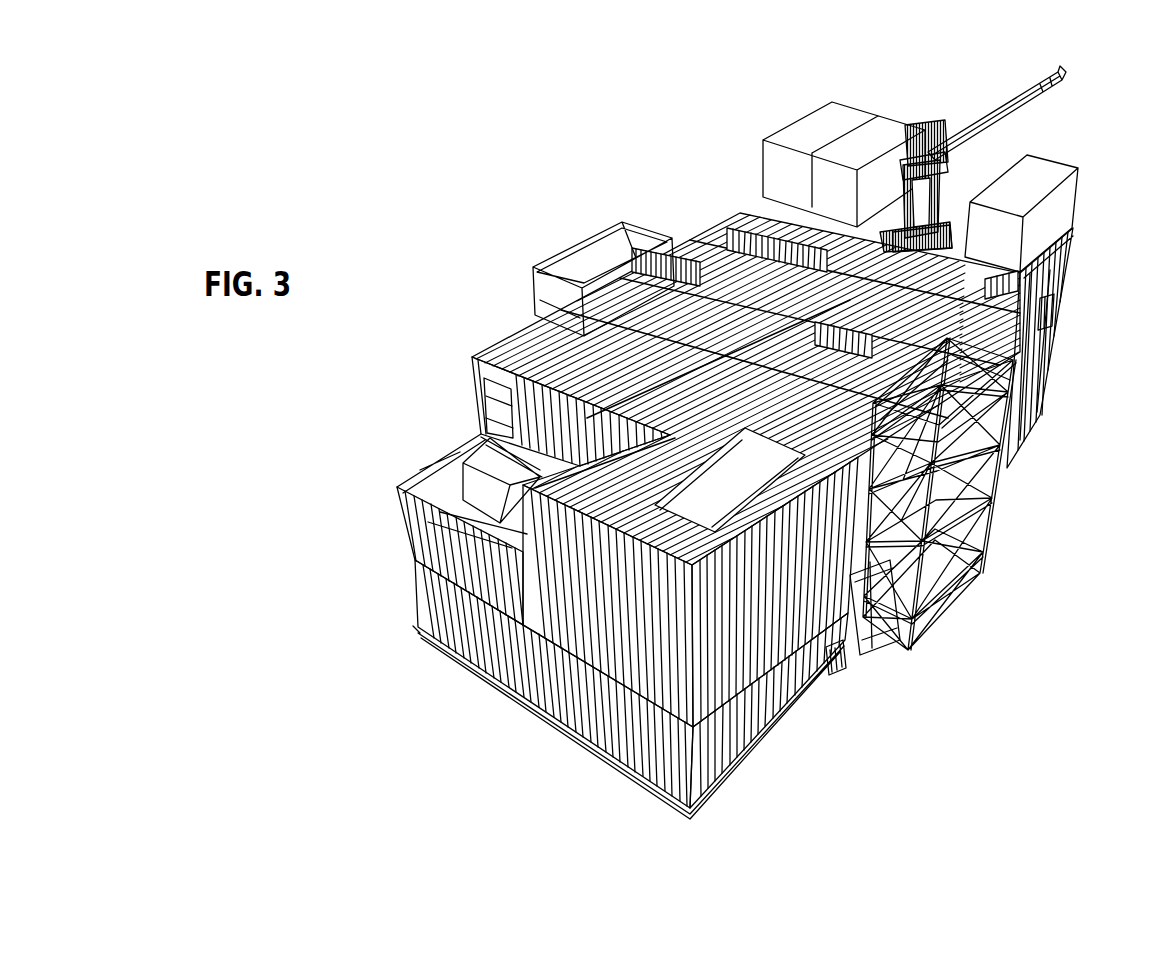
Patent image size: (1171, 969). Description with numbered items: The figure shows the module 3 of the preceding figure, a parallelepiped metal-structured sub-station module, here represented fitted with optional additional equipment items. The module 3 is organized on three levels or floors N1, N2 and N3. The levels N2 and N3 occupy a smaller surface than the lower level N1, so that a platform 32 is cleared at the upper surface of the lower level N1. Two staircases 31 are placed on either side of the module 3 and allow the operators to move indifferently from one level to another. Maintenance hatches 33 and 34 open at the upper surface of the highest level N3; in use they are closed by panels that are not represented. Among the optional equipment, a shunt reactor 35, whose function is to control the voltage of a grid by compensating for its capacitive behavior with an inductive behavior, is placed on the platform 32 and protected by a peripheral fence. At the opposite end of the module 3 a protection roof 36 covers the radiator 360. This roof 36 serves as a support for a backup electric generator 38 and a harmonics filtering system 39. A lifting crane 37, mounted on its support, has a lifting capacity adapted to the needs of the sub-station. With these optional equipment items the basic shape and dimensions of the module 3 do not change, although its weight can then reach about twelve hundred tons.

The module 3 is at (478, 198).
The staircase 31 is at (560, 234).
The platform 32 is at (599, 669).
The maintenance hatch 33 is at (802, 236).
The maintenance hatch 34 is at (849, 326).
The shunt reactor 35 is at (713, 484).
The protection roof 36 is at (1068, 270).
The radiator 360 is at (1056, 323).
The lifting crane 37 is at (992, 112).
The backup electric generator 38 is at (889, 97).
The harmonics filtering system 39 is at (1070, 152).
The first level N1 is at (401, 606).
The second level N2 is at (380, 537).
The third level N3 is at (462, 404).